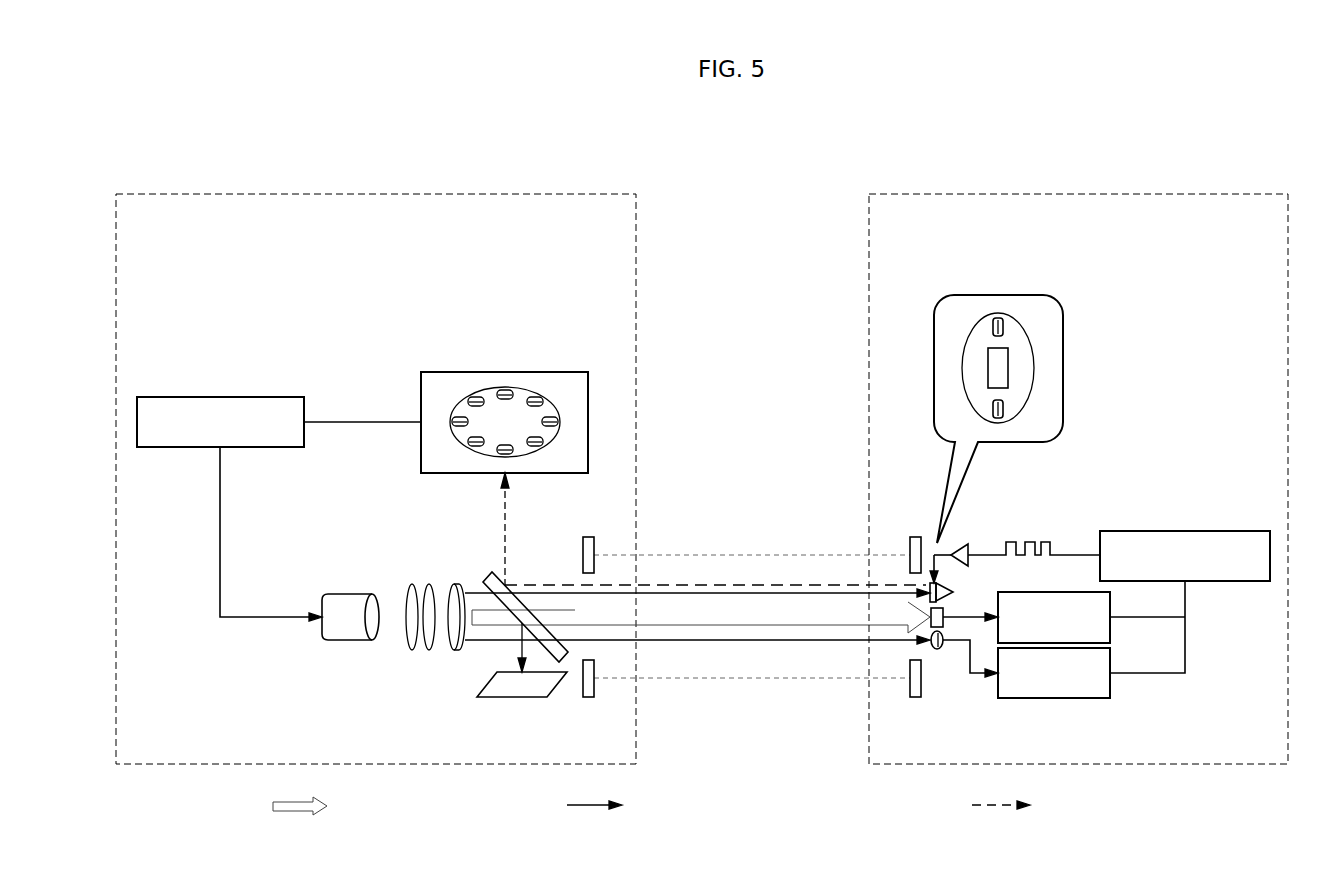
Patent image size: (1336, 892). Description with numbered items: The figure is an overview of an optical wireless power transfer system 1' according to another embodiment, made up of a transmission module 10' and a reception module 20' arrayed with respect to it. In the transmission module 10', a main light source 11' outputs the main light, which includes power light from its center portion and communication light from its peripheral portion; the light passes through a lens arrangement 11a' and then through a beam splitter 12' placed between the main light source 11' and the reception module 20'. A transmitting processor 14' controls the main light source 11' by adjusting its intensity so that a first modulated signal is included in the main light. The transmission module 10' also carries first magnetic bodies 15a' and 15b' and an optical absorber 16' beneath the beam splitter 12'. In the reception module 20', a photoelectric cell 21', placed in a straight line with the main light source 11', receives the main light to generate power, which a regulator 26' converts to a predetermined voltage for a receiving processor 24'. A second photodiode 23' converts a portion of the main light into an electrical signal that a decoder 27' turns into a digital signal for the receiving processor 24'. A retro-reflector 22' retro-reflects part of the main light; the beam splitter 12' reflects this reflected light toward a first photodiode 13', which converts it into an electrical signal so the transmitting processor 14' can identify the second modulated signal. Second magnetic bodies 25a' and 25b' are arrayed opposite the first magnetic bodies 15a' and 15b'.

The optical wireless power transfer system 1' is at (696, 470).
The transmission module 10' is at (523, 455).
The main light source 11' is at (350, 645).
The lens unit 11a' is at (435, 640).
The beam splitter 12' is at (514, 592).
The first photodiode 13' is at (504, 451).
The transmitting processor 14' is at (279, 481).
The first magnetic body 15a' is at (588, 528).
The first magnetic body 15b' is at (589, 706).
The optical absorber 16' is at (522, 688).
The reception module 20' is at (1078, 455).
The photoelectric cell 21' is at (947, 487).
The retro-reflector 22' is at (965, 583).
The second photodiode 23' is at (1027, 512).
The receiving processor 24' is at (1185, 532).
The second magnetic body 25a' is at (914, 529).
The second magnetic body 25b' is at (915, 706).
The regulator 26' is at (1086, 623).
The decoder 27' is at (1086, 676).